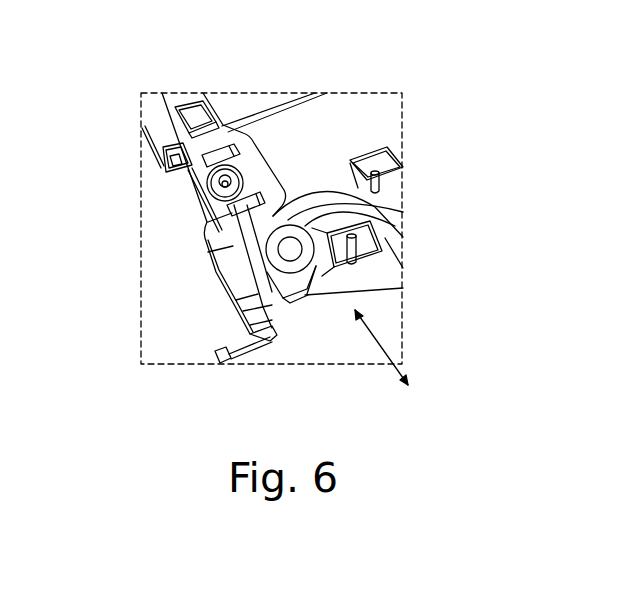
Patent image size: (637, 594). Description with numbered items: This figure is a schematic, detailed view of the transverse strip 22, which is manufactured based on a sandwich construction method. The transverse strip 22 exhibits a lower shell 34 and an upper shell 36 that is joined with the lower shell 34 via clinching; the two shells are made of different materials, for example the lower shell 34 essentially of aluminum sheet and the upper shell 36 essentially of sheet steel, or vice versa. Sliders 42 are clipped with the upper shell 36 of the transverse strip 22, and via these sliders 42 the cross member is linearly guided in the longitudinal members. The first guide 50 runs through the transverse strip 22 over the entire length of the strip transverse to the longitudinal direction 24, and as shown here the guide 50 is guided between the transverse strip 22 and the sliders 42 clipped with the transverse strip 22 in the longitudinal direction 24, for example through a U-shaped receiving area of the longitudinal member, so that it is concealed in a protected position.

The transverse strip 22 is at (372, 78).
The longitudinal direction 24 is at (381, 347).
The lower shell 34 is at (180, 172).
The upper shell 36 is at (392, 244).
The sliders 42 is at (228, 263).
The first guide 50 is at (248, 352).